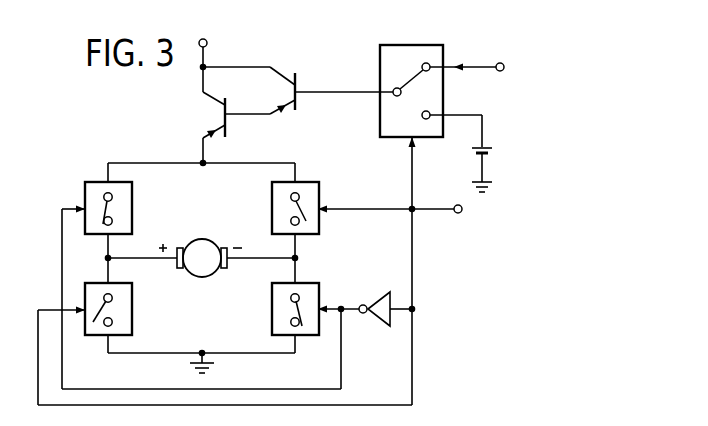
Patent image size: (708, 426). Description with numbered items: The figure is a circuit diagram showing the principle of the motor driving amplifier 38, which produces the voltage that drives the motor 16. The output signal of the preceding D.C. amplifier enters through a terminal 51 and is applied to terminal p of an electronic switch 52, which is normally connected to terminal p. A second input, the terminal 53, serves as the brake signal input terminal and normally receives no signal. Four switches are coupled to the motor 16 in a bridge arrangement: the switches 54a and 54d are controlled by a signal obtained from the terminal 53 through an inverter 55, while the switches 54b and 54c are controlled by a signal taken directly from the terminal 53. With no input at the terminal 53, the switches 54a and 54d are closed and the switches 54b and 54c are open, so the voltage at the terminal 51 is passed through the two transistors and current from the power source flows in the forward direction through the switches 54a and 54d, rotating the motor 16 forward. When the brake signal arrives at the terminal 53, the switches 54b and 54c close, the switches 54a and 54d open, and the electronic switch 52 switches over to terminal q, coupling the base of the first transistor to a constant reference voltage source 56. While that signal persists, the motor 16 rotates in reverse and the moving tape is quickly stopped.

The motor driving amplifier 38 is at (157, 104).
The motor 16 is at (200, 238).
The terminal 51 is at (500, 62).
The electronic switch 52 is at (403, 45).
The terminal 53 is at (463, 212).
The switch 54a is at (88, 180).
The switch 54b is at (93, 337).
The switch 54c is at (312, 180).
The switch 54d is at (300, 337).
The inverter 55 is at (380, 293).
The constant reference voltage source 56 is at (491, 151).